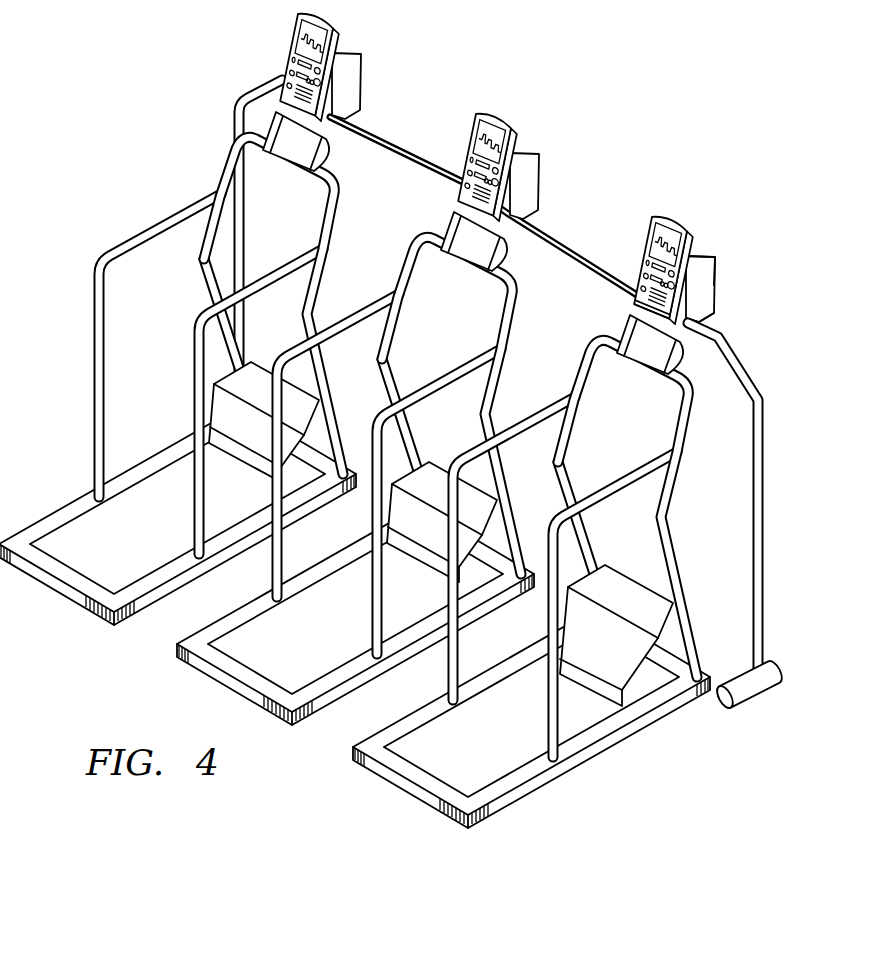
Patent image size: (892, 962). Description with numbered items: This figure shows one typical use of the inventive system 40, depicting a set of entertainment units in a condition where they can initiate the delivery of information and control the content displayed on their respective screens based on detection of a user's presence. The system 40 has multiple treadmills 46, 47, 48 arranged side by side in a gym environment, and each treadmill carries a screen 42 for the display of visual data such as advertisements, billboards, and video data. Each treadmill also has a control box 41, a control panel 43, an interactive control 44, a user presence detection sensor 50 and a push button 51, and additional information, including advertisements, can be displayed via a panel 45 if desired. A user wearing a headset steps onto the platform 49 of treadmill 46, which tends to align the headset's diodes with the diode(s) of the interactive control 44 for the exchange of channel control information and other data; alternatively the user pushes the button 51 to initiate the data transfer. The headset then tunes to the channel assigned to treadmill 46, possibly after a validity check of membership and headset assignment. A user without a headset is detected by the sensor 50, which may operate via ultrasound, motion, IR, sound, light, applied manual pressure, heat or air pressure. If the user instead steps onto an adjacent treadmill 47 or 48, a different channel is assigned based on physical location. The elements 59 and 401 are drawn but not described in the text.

The system 40 is at (145, 49).
The control box 41 is at (711, 308).
The screen 42 is at (650, 214).
The control panel 43 is at (635, 299).
The interactive control 44 is at (692, 272).
The panel 45 is at (642, 354).
The treadmill 46 is at (688, 444).
The treadmill 47 is at (421, 445).
The treadmill 48 is at (244, 345).
The platform 49 is at (371, 739).
The user presence detection sensor 50 is at (713, 287).
The push button 51 is at (641, 272).
The communication cable 59 is at (483, 147).
The support pole 401 is at (749, 372).